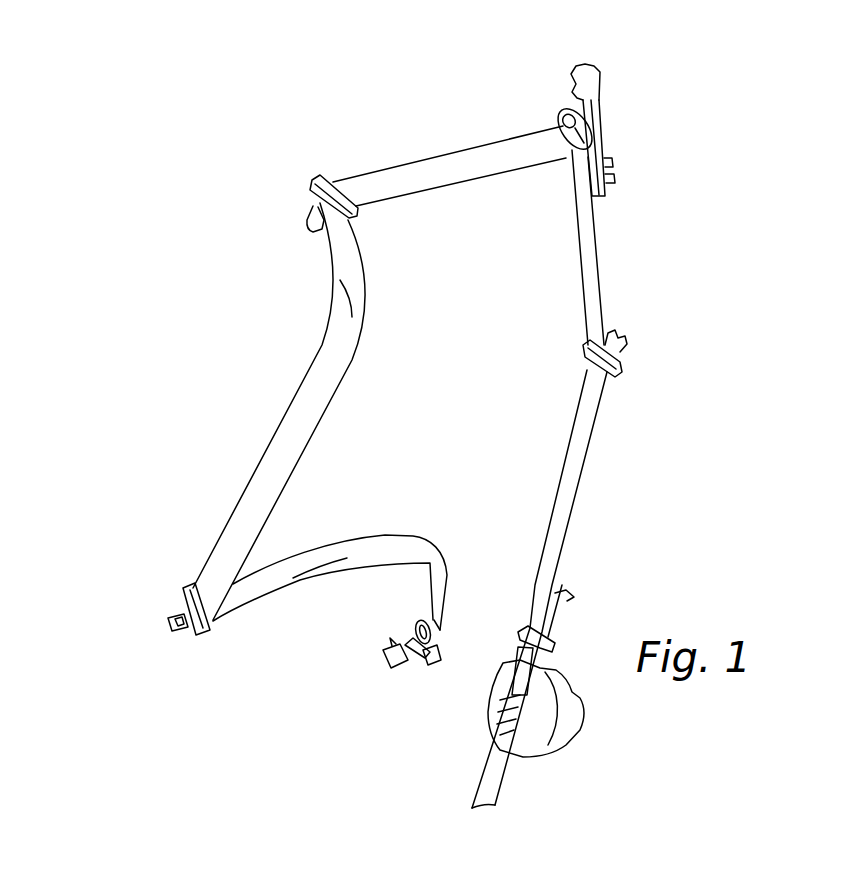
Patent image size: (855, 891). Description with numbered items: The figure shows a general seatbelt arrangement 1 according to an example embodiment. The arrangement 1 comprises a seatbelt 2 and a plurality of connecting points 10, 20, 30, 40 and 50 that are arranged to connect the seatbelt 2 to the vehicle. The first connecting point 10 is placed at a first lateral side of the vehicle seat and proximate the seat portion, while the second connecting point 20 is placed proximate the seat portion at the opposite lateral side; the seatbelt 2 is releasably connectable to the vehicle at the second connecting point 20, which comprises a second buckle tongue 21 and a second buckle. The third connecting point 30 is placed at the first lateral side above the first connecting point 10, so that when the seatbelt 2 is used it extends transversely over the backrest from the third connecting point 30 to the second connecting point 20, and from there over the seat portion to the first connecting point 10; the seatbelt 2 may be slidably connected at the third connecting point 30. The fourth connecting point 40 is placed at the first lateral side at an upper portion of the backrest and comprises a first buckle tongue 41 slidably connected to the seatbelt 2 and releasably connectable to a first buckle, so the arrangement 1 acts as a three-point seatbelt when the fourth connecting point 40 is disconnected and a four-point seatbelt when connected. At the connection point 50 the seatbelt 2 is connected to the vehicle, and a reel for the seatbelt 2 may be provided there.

The seatbelt arrangement 1 is at (708, 56).
The seatbelt 2 is at (272, 467).
The first connecting point 10 is at (428, 668).
The second connecting point 20 is at (132, 562).
The second buckle tongue 21 is at (186, 588).
The third connecting point 30 is at (593, 122).
The fourth connecting point 40 is at (330, 165).
The first buckle tongue 41 is at (336, 182).
The connection point 50 is at (530, 760).